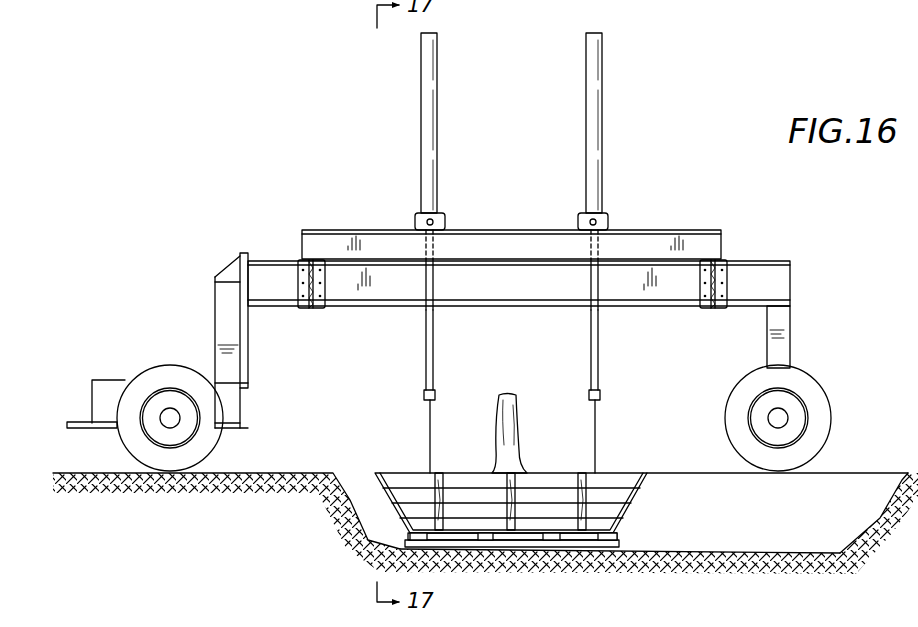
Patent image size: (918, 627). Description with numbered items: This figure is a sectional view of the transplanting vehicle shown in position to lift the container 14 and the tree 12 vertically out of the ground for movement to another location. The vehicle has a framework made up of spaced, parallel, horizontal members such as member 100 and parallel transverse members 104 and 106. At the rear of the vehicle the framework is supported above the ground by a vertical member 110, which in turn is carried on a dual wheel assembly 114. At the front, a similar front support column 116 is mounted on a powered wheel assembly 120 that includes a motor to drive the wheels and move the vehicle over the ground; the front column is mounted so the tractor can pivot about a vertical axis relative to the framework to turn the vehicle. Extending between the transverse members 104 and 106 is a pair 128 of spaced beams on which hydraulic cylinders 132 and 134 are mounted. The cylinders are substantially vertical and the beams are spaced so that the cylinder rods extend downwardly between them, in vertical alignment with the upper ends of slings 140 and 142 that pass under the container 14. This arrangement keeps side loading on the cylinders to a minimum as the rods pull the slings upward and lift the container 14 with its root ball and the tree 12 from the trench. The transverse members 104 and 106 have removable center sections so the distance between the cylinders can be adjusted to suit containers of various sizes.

The tree 12 is at (520, 418).
The container 14 is at (401, 469).
The horizontal member 100 is at (532, 290).
The transverse member 104 is at (302, 310).
The transverse member 106 is at (700, 308).
The vertical member 110 is at (780, 322).
The dual wheel assembly 114 is at (718, 435).
The front support column 116 is at (215, 332).
The powered wheel assembly 120 is at (147, 364).
The pair of spaced beams 128 is at (518, 230).
The hydraulic cylinder 132 is at (421, 110).
The hydraulic cylinder 134 is at (604, 114).
The sling 140 is at (428, 422).
The sling 142 is at (597, 431).